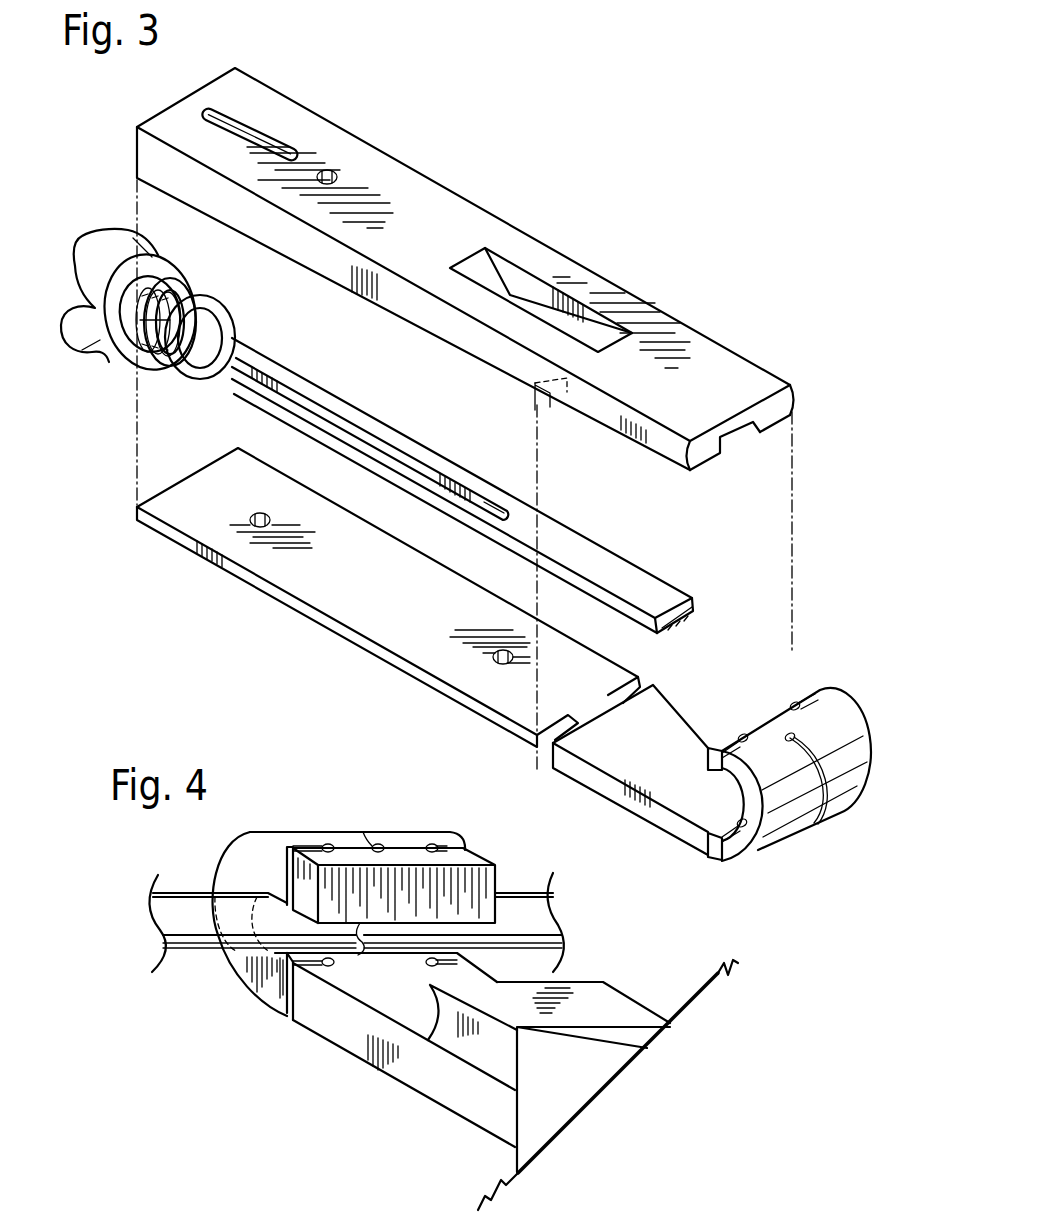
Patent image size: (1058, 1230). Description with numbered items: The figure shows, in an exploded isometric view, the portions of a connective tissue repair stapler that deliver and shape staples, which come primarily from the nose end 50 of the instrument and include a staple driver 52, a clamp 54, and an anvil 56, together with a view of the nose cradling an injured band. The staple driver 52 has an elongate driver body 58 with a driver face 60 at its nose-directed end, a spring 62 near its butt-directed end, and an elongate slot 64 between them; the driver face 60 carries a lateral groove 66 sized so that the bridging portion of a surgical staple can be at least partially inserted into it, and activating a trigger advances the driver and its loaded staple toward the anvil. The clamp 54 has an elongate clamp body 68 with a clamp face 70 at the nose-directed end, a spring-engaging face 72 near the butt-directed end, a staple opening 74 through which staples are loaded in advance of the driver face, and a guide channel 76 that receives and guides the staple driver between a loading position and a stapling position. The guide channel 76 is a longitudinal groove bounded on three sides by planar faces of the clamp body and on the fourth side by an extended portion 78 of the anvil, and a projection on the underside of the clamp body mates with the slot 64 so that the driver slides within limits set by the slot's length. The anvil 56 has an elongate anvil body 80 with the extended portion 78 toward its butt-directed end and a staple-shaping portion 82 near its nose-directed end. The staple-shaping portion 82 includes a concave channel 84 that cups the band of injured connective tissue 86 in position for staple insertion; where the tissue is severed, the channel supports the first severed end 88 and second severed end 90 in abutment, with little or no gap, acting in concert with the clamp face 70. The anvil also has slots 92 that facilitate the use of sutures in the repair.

In FIG. 3, the nose end 50 is at (722, 197).
In FIG. 3, the staple driver 52 is at (812, 586).
In FIG. 3, the clamp 54 is at (850, 378).
In FIG. 3, the anvil 56 is at (858, 699).
In FIG. 3, the elongate driver body 58 is at (559, 533).
In FIG. 3, the driver face 60 is at (697, 598).
In FIG. 3, the spring 62 is at (177, 296).
In FIG. 3, the elongate slot 64 is at (336, 410).
In FIG. 3, the lateral groove 66 is at (659, 631).
In FIG. 3, the elongate clamp body 68 is at (633, 303).
In FIG. 4, the elongate clamp body 68 is at (607, 998).
In FIG. 3, the clamp face 70 is at (783, 407).
In FIG. 3, the spring-engaging face 72 is at (170, 108).
In FIG. 3, the staple opening 74 is at (542, 290).
In FIG. 3, the guide channel 76 is at (725, 447).
In FIG. 3, the extended portion 78 is at (357, 612).
In FIG. 3, the elongate anvil body 80 is at (371, 541).
In FIG. 3, the staple-shaping portion 82 is at (828, 795).
In FIG. 4, the staple-shaping portion 82 is at (316, 832).
In FIG. 3, the concave channel 84 is at (740, 819).
In FIG. 4, the band of injured connective tissue 86 is at (191, 881).
In FIG. 4, the first severed end 88 is at (215, 946).
In FIG. 4, the second severed end 90 is at (511, 898).
In FIG. 3, the slots 92 is at (810, 740).
In FIG. 4, the slots 92 is at (303, 849).